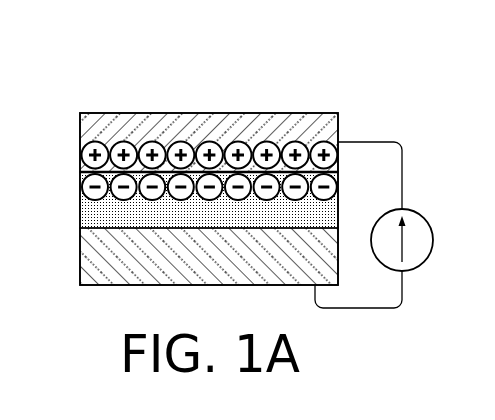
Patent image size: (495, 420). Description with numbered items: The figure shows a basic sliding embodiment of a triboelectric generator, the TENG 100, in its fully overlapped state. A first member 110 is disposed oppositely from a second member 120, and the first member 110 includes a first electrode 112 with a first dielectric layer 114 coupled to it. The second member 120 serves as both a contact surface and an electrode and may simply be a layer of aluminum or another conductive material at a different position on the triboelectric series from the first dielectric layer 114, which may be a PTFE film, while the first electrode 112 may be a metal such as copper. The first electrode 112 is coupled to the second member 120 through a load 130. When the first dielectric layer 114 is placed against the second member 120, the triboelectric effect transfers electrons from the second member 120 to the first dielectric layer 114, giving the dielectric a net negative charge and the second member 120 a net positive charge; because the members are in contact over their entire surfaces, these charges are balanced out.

The TENG 100 is at (256, 176).
The first member 110 is at (209, 272).
The first electrode 112 is at (233, 275).
The first dielectric layer 114 is at (80, 212).
The second member 120 is at (195, 122).
The load 130 is at (433, 240).